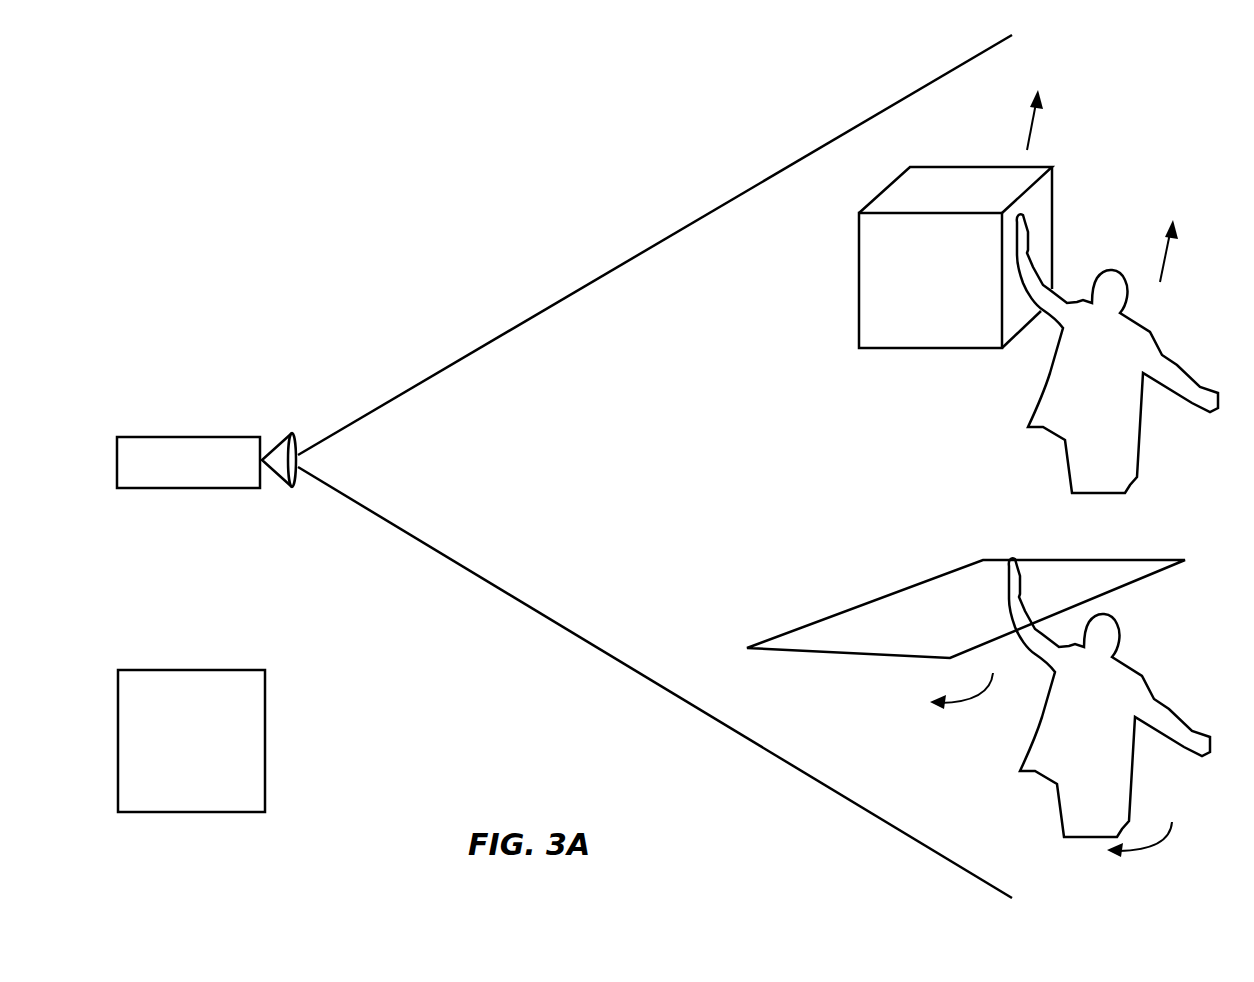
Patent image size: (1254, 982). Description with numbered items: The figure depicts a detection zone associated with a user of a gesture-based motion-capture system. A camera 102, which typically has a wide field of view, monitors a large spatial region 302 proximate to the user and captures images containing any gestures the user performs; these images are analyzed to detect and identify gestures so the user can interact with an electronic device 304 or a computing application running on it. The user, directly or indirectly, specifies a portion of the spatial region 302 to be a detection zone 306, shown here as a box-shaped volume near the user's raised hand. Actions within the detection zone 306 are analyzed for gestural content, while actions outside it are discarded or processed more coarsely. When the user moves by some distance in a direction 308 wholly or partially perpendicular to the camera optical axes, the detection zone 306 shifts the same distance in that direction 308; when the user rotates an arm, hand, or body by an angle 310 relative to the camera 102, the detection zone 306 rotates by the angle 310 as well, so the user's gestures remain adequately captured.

The camera 102 is at (185, 437).
The spatial region 302 is at (763, 223).
The electronic device 304 is at (190, 670).
The detection zone 306 is at (859, 335).
The direction 308 is at (1121, 186).
The angle 310 is at (1055, 779).